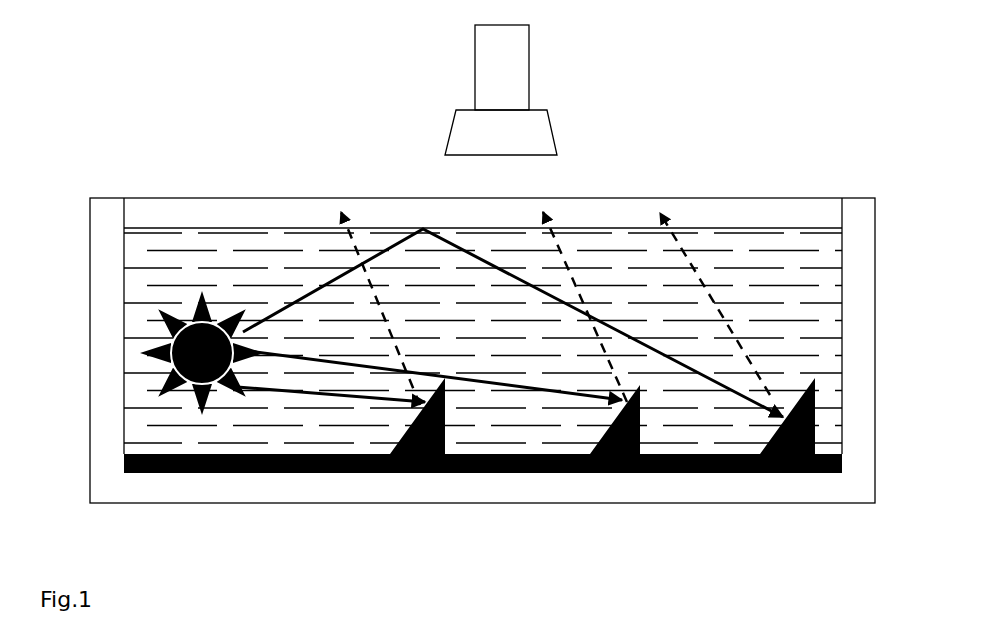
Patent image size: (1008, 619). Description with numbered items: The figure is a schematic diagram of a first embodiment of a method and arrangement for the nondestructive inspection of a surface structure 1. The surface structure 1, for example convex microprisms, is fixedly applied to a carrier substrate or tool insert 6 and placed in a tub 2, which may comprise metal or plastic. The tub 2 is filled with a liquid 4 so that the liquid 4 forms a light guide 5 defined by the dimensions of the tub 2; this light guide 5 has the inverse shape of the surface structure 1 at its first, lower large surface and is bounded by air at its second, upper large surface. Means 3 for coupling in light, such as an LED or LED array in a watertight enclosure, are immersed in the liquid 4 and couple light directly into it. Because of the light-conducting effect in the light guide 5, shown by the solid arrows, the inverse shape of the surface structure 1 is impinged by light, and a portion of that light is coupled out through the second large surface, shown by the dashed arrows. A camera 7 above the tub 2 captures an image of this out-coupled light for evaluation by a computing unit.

The surface structure 1 is at (445, 423).
The tub 2 is at (108, 445).
The means for coupling in light 3 is at (165, 345).
The liquid 4 is at (603, 254).
The light guide 5 is at (261, 226).
The tool insert 6 is at (527, 466).
The camera 7 is at (500, 77).